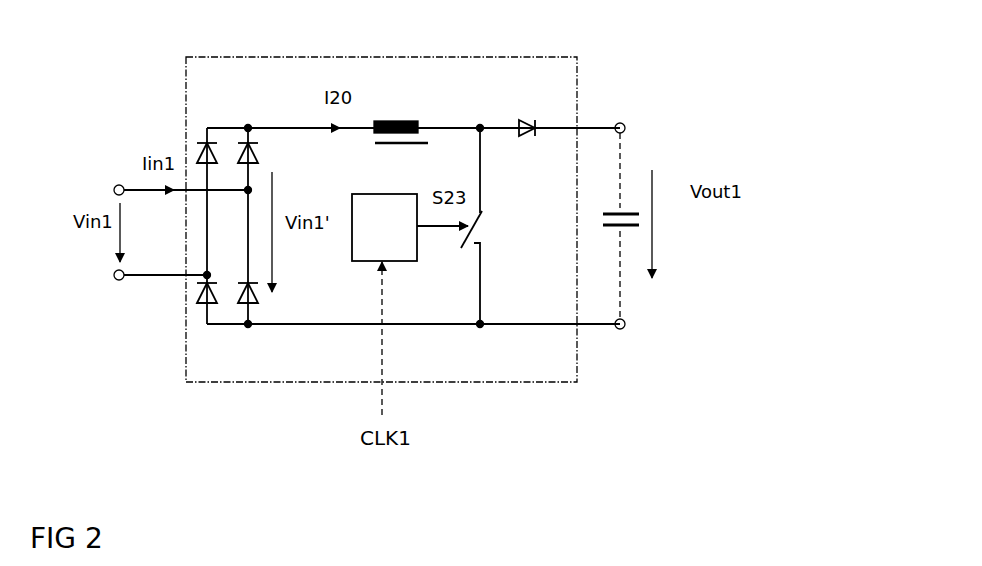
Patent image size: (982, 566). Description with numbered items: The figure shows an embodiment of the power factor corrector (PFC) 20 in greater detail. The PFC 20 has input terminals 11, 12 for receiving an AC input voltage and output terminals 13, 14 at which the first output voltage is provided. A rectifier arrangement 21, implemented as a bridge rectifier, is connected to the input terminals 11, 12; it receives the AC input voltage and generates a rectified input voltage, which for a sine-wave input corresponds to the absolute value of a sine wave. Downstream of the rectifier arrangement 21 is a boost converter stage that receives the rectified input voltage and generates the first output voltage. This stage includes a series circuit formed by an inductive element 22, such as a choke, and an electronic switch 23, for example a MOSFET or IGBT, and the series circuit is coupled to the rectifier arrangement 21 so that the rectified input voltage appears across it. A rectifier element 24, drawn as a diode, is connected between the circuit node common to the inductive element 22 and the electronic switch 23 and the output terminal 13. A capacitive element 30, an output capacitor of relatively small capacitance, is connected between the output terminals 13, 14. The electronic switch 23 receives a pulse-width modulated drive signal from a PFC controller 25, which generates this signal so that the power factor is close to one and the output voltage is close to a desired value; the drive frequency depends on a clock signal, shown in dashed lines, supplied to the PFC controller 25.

The input terminal 11 is at (117, 183).
The input terminal 12 is at (117, 282).
The output terminal 13 is at (621, 121).
The output terminal 14 is at (619, 331).
The power factor corrector 20 is at (451, 57).
The rectifier arrangement 21 is at (231, 117).
The inductive element 22 is at (398, 117).
The electronic switch 23 is at (492, 230).
The rectifier element 24 is at (527, 115).
The PFC controller 25 is at (385, 190).
The capacitive element 30 is at (603, 208).